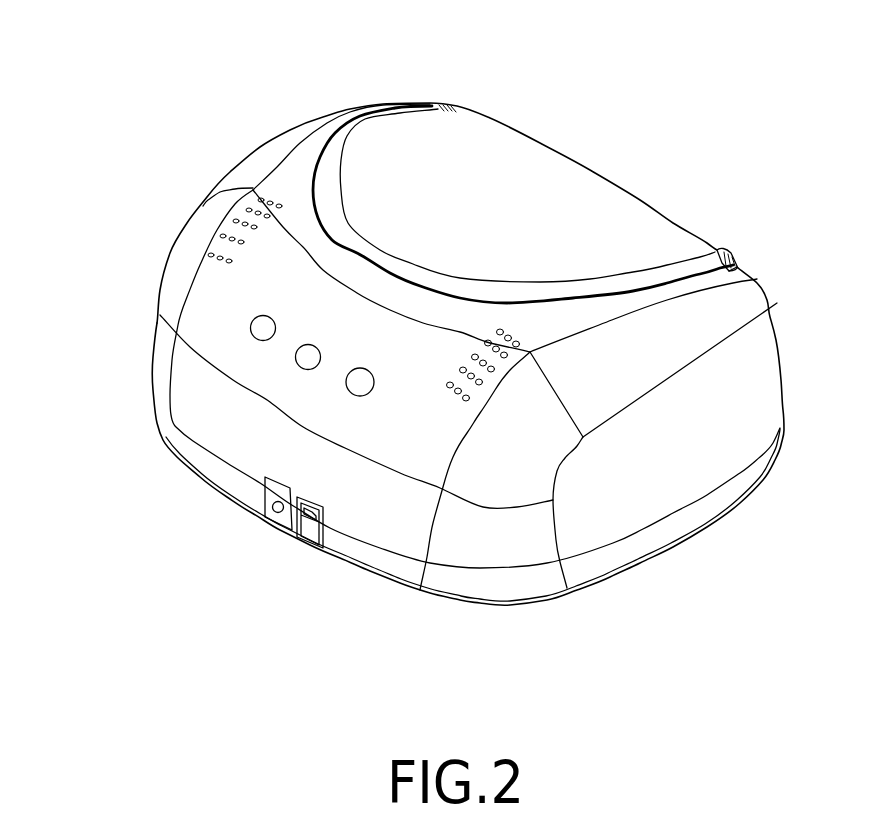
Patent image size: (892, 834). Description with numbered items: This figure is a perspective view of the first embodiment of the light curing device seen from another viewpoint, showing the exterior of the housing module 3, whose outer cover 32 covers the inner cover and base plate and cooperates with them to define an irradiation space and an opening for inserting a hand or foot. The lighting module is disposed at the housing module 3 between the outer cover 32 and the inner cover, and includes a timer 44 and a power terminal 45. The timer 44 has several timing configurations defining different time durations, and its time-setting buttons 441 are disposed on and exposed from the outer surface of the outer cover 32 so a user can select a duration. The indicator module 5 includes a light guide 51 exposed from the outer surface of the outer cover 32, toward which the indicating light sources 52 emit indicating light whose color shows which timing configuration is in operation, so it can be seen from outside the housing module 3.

The housing module 3 is at (275, 130).
The outer cover 32 is at (208, 225).
The indicator module 5 is at (367, 98).
The light guide 51 is at (342, 143).
The indicating light sources 52 is at (720, 251).
The timer 44 is at (360, 410).
The time-setting buttons 441 is at (363, 384).
The power terminal 45 is at (276, 520).